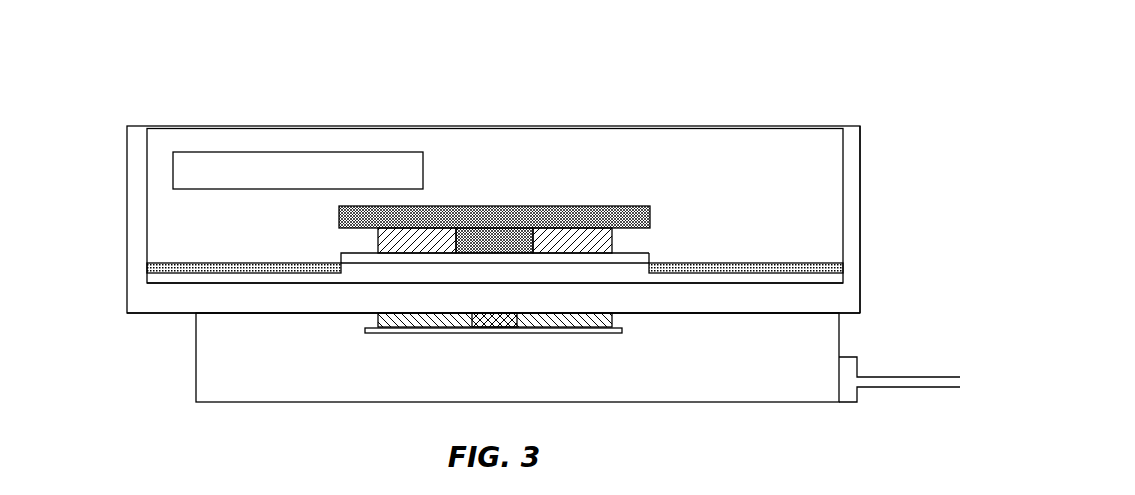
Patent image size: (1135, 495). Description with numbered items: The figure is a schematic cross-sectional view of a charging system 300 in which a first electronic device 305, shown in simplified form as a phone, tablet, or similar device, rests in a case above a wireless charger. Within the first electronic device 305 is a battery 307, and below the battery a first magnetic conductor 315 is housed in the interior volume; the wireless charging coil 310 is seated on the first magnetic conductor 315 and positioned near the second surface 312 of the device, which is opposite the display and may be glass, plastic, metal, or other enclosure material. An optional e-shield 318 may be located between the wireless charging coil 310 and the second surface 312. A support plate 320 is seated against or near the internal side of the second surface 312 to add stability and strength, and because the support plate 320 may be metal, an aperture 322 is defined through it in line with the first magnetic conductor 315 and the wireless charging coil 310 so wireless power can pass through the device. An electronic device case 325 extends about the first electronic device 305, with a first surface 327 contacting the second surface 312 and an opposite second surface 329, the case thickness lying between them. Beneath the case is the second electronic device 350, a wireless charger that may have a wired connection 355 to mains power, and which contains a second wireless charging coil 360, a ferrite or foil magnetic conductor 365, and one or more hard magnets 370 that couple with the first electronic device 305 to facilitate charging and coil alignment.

The charging system 300 is at (119, 77).
The first electronic device 305 is at (812, 125).
The battery 307 is at (252, 152).
The wireless charging coil 310 is at (613, 247).
The second surface 312 is at (153, 285).
The first magnetic conductor 315 is at (559, 207).
The e-shield 318 is at (340, 253).
The support plate 320 is at (743, 263).
The aperture 322 is at (650, 265).
The electronic device case 325 is at (862, 222).
The first surface 327 is at (283, 285).
The second surface 329 is at (328, 315).
The second electronic device 350 is at (233, 403).
The wired connection 355 is at (845, 355).
The second wireless charging coil 360 is at (613, 325).
The magnetic conductor 365 is at (402, 332).
The hard magnets 370 is at (505, 328).